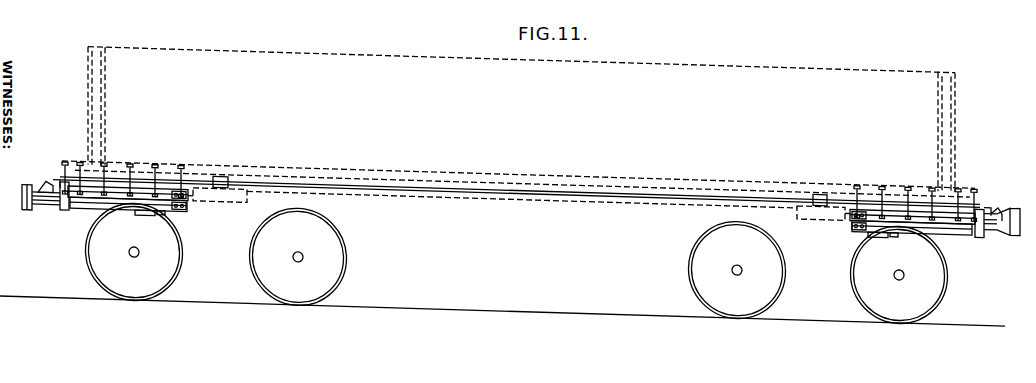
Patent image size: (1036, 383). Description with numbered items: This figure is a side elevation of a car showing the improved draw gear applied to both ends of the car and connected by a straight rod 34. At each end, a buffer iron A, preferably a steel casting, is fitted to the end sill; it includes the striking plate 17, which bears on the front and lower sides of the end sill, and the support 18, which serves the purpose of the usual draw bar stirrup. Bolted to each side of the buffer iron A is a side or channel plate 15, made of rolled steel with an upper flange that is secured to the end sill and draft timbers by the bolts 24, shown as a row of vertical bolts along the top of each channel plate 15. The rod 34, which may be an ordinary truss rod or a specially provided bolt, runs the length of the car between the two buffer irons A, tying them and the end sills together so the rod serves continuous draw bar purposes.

The side or channel plate 15 is at (134, 197).
The striking plate 17 is at (60, 176).
The support 18 is at (64, 208).
The bolts 24 is at (82, 162).
The rods 34 is at (562, 175).
The buffer iron A is at (57, 198).